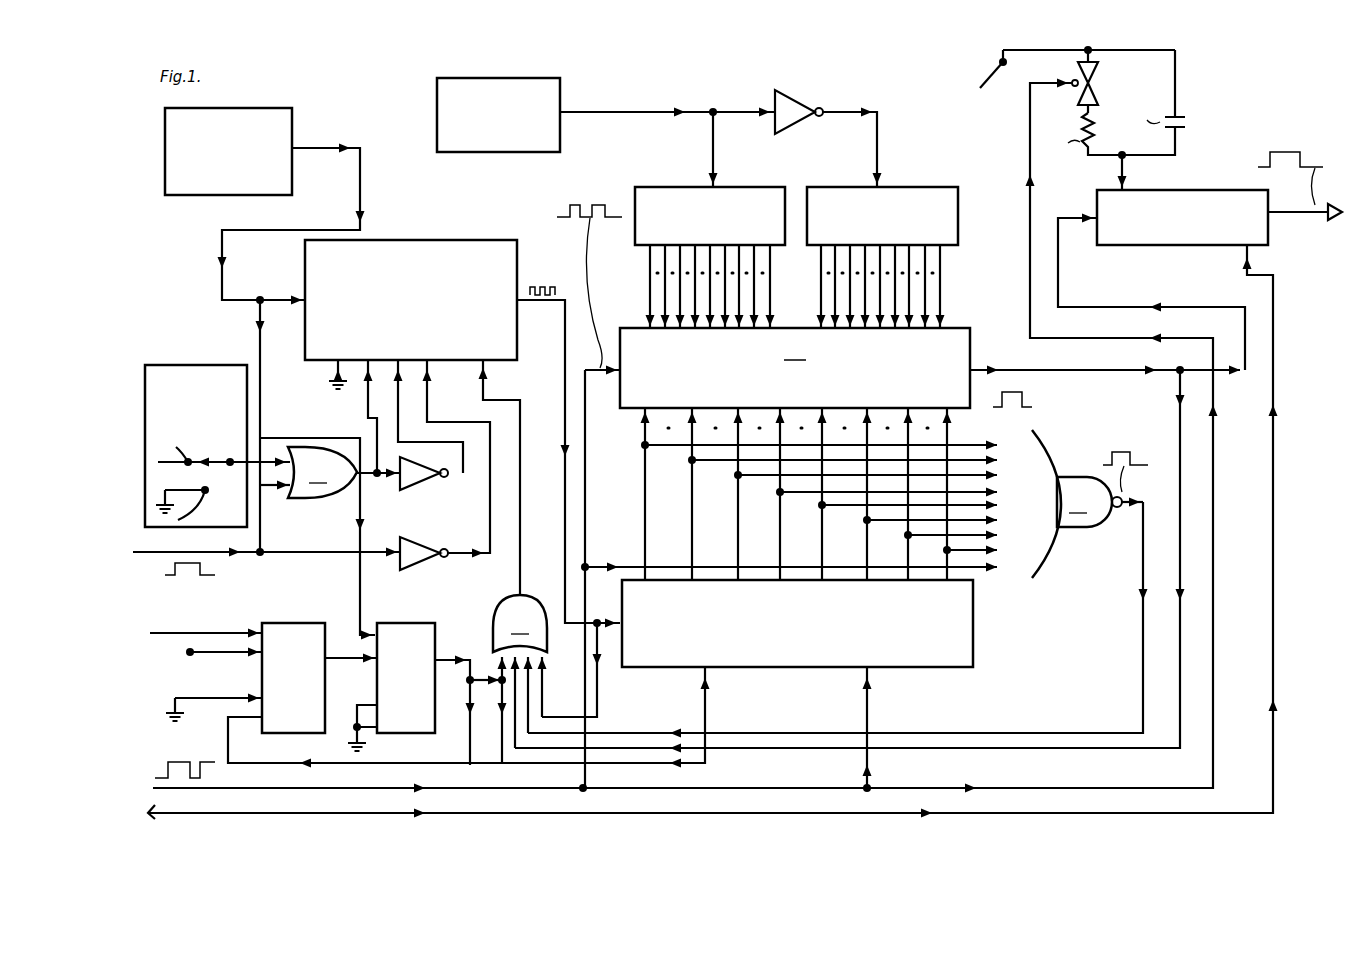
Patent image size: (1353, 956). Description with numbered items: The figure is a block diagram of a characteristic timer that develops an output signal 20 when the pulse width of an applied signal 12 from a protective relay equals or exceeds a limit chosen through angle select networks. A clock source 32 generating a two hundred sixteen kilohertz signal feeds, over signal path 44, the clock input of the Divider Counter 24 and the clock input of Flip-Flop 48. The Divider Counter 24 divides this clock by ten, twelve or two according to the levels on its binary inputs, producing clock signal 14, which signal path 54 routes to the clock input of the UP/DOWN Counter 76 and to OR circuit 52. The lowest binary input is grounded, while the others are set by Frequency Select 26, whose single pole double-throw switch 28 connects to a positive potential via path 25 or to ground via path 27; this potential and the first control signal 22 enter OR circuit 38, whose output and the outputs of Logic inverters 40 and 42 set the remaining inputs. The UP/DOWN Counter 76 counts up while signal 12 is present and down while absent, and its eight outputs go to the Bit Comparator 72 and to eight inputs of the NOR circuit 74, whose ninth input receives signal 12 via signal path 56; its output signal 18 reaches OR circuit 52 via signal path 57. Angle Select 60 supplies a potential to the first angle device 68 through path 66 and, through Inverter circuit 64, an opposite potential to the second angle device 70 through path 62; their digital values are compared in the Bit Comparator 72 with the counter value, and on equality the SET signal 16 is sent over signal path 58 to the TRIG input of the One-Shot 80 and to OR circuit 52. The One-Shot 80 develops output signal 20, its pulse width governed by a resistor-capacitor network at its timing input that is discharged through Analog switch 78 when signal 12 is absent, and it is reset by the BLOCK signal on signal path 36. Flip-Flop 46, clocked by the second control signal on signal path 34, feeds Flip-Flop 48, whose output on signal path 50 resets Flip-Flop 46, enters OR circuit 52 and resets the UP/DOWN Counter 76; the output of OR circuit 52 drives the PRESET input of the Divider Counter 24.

The applied signal 12 is at (580, 190).
The output signal 14 is at (545, 282).
The SET signal 16 is at (1012, 372).
The output signal 18 is at (1112, 452).
The output signal 20 is at (1264, 150).
The first control signal 22 is at (165, 576).
The Divider Counter 24 is at (402, 242).
The path 25 is at (168, 467).
The Frequency Select 26 is at (172, 380).
The path 27 is at (178, 520).
The single pole double-throw switch 28 is at (218, 460).
The clock source 32 is at (190, 195).
The signal path 34 is at (182, 634).
The signal path 36 is at (296, 816).
The OR circuit 38 is at (330, 472).
The Logic inverter 40 is at (428, 485).
The Logic inverter 42 is at (428, 567).
The signal path 44 is at (358, 190).
The Flip-Flop 46 is at (300, 624).
The Flip-Flop 48 is at (414, 624).
The signal path 50 is at (468, 650).
The OR circuit 52 is at (520, 679).
The signal path 54 is at (508, 512).
The signal path 56 is at (232, 800).
The signal path 57 is at (1142, 630).
The signal path 58 is at (1178, 684).
The Angle Select 60 is at (562, 90).
The path 62 is at (716, 150).
The Inverter circuit 64 is at (805, 92).
The path 66 is at (880, 140).
The Angle #1 device 68 is at (842, 186).
The Angle #2 device 70 is at (672, 186).
The Bit Comparator 72 is at (795, 368).
The NOR circuit 74 is at (1087, 504).
The UP/DOWN Counter 76 is at (640, 430).
The Analog switch 78 is at (1100, 72).
The One-Shot 80 is at (1183, 245).